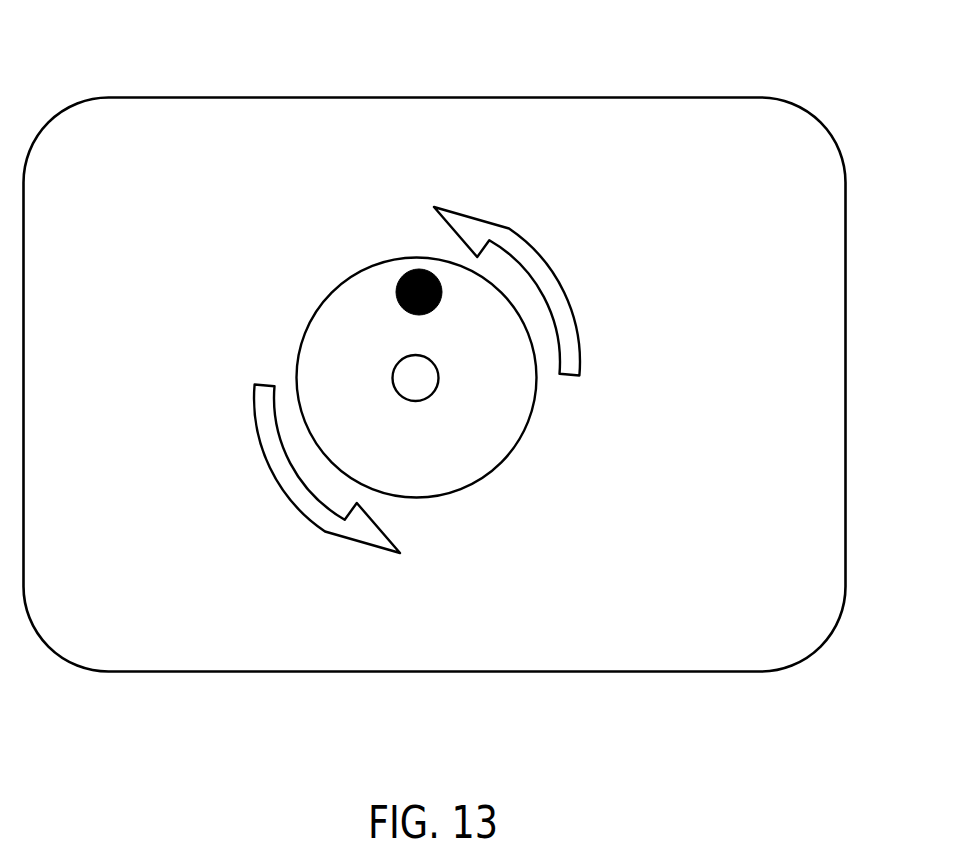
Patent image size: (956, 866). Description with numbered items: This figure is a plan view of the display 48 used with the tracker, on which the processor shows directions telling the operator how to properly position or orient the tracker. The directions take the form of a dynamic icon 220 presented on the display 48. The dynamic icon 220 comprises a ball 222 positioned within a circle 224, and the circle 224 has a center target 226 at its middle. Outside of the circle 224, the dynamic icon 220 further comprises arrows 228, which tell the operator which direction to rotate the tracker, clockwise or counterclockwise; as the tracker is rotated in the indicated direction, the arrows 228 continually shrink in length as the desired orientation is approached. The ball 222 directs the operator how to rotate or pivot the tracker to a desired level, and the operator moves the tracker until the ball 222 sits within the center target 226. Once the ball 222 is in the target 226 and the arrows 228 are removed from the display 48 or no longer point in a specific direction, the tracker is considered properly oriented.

The display 48 is at (435, 343).
The dynamic icon 220 is at (247, 123).
The ball 222 is at (369, 267).
The circle 224 is at (429, 413).
The center target 226 is at (515, 424).
The arrows 228 is at (398, 374).